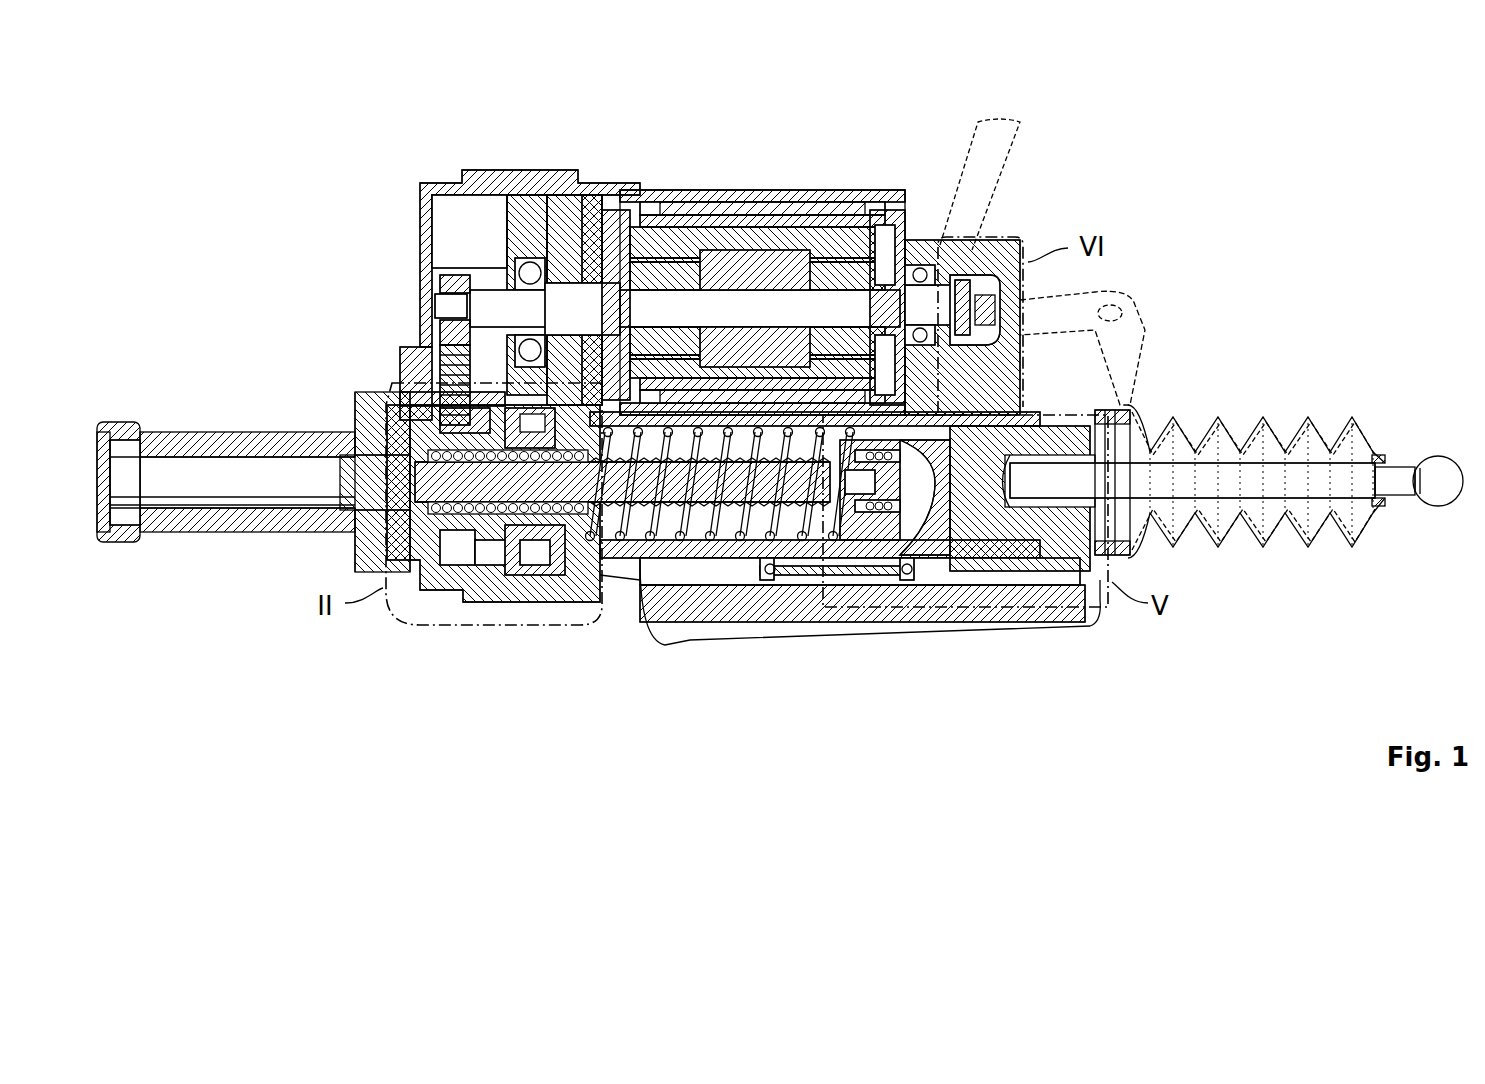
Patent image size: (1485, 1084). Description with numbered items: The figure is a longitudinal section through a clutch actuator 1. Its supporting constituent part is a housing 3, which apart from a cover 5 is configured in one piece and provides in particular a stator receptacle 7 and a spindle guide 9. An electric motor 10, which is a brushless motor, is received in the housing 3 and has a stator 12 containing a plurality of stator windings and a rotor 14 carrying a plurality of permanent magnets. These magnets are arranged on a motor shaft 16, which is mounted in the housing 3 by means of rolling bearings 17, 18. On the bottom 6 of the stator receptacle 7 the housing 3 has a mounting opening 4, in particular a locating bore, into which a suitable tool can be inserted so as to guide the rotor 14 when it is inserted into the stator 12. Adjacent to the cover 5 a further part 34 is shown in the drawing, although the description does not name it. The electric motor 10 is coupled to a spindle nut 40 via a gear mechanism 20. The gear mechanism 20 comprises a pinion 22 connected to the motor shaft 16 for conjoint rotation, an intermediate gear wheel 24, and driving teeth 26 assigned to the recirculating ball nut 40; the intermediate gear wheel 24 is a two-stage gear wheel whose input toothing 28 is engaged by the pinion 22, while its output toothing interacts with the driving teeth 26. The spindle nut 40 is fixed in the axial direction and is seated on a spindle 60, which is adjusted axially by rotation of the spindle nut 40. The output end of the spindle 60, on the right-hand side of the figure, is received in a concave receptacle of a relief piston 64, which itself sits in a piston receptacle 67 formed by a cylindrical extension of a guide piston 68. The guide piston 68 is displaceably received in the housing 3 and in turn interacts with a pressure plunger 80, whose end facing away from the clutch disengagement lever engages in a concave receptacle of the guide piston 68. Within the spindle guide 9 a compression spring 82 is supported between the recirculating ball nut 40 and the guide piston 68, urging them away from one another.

The clutch actuator 1 is at (1140, 218).
The housing 3 is at (495, 182).
The mounting opening 4 is at (990, 282).
The cover 5 is at (425, 213).
The bottom 6 is at (885, 235).
The stator receptacle 7 is at (700, 210).
The spindle guide 9 is at (718, 530).
The electric motor 10 is at (800, 172).
The stator 12 is at (745, 215).
The rotor 14 is at (650, 270).
The motor shaft 16 is at (568, 297).
The rolling bearing 17 is at (912, 268).
The rolling bearing 18 is at (523, 268).
The gear mechanism 20 is at (408, 305).
The pinion 22 is at (447, 285).
The intermediate gear wheel 24 is at (440, 363).
The driving teeth 26 is at (490, 535).
The input toothing 28 is at (440, 322).
The cover 34 is at (538, 200).
The spindle nut 40 is at (535, 520).
The spindle 60 is at (696, 485).
The relief piston 64 is at (940, 486).
The piston receptacle 67 is at (905, 505).
The guide piston 68 is at (1008, 520).
The pressure plunger 80 is at (1268, 470).
The compression spring 82 is at (745, 522).